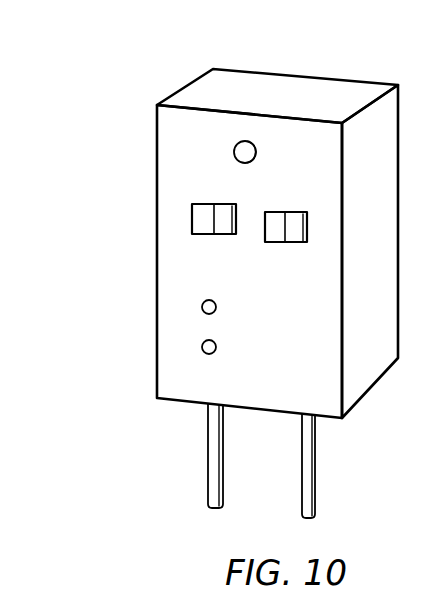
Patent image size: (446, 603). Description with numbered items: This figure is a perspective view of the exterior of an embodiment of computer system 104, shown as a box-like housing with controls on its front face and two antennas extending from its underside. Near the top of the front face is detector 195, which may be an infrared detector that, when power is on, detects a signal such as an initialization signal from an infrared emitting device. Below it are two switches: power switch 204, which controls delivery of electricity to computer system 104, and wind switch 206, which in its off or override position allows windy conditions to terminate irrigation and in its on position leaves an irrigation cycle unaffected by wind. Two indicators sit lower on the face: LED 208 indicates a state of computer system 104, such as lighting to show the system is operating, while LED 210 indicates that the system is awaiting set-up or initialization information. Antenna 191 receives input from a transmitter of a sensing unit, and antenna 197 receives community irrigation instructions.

The computer system 104 is at (116, 60).
The detector 195 is at (243, 150).
The power switch 204 is at (218, 235).
The wind switch 206 is at (280, 220).
The LED 208 is at (217, 307).
The LED 210 is at (217, 348).
The antenna 191 is at (209, 442).
The antenna 197 is at (315, 465).